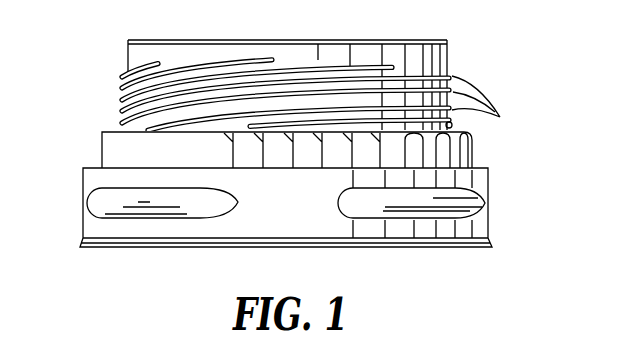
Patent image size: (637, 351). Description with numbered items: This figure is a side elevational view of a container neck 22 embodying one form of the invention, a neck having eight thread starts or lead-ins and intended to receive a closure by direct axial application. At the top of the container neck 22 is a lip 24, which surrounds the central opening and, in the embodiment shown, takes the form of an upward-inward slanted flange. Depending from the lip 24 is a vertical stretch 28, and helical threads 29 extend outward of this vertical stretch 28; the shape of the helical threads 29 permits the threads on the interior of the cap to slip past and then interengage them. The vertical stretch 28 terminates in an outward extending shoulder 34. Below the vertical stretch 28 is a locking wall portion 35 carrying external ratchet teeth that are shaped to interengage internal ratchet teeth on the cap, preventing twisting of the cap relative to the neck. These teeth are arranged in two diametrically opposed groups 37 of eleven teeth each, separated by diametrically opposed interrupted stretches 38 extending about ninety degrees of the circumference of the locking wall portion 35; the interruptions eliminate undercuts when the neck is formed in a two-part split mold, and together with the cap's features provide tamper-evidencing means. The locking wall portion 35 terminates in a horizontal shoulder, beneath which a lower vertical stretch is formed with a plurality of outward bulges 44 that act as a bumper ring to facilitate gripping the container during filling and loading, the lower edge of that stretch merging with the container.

The container neck 22 is at (470, 57).
The lip 24 is at (399, 41).
The vertical stretch 28 is at (450, 50).
The helical threads 29 is at (500, 117).
The outward extending shoulder 34 is at (110, 128).
The locking wall portion 35 is at (102, 143).
The groups of teeth 37 is at (450, 148).
The interrupted stretches 38 is at (120, 152).
The outward bulges 44 is at (108, 207).